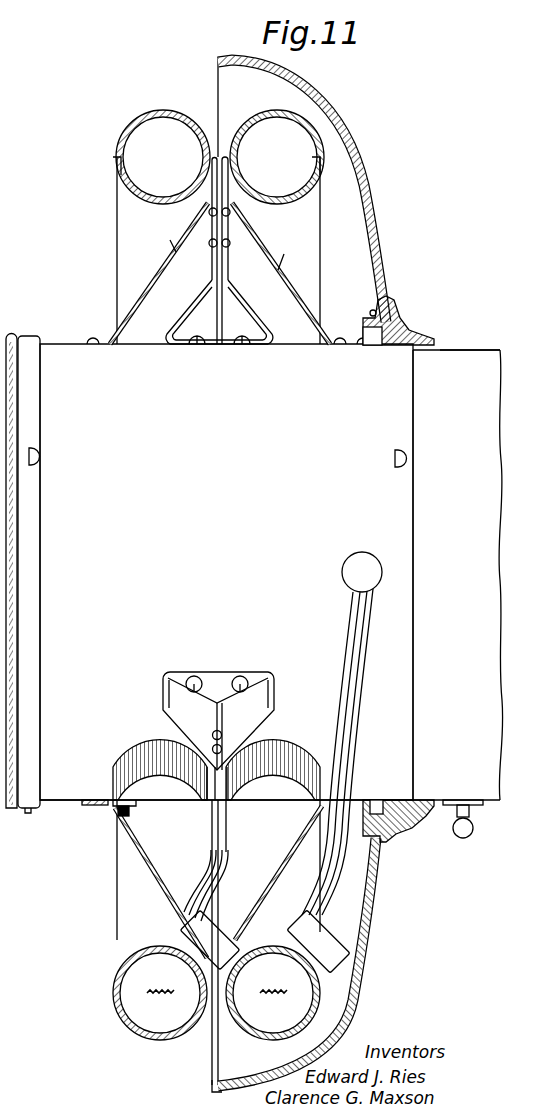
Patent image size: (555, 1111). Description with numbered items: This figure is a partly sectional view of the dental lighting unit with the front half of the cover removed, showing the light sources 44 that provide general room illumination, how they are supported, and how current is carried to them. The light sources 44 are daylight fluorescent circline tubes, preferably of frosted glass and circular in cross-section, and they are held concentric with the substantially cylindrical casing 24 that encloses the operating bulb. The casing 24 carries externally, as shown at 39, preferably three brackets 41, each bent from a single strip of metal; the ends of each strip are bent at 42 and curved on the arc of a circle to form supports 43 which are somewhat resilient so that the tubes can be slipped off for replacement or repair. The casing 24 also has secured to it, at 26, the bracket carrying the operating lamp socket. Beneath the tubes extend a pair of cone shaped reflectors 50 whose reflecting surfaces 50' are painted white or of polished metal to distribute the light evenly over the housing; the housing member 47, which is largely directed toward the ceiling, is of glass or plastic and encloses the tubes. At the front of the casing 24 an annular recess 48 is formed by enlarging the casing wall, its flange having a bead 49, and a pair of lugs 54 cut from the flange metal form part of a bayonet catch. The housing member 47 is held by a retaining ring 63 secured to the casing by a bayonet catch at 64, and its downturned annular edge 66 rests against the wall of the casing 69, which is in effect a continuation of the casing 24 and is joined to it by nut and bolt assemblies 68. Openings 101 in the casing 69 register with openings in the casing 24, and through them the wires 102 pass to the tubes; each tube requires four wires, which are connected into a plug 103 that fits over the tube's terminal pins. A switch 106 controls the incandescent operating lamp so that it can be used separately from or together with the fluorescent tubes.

The cylindrical casing 24 is at (290, 357).
The bracket securing point 26 is at (134, 810).
The bracket attachment point 39 is at (240, 346).
The bracket 41 is at (229, 247).
The bent end of bracket strip 42 is at (221, 158).
The support or seat 43 is at (166, 206).
The light source 44 is at (165, 115).
The housing member 47 is at (380, 272).
The annular recess 48 is at (32, 337).
The bead 49 is at (12, 333).
The cone shaped reflector 50 is at (220, 580).
The reflecting surface 50' is at (216, 254).
The lug 54 is at (37, 456).
The retaining ring 63 is at (406, 319).
The bayonet catch 64 is at (417, 801).
The downturned annular edge 66 is at (436, 344).
The nut and bolt assembly 68 is at (362, 344).
The casing 69 is at (484, 358).
The opening 101 is at (368, 553).
The wires 102 is at (350, 786).
The plug 103 is at (222, 930).
The switch 106 is at (464, 831).